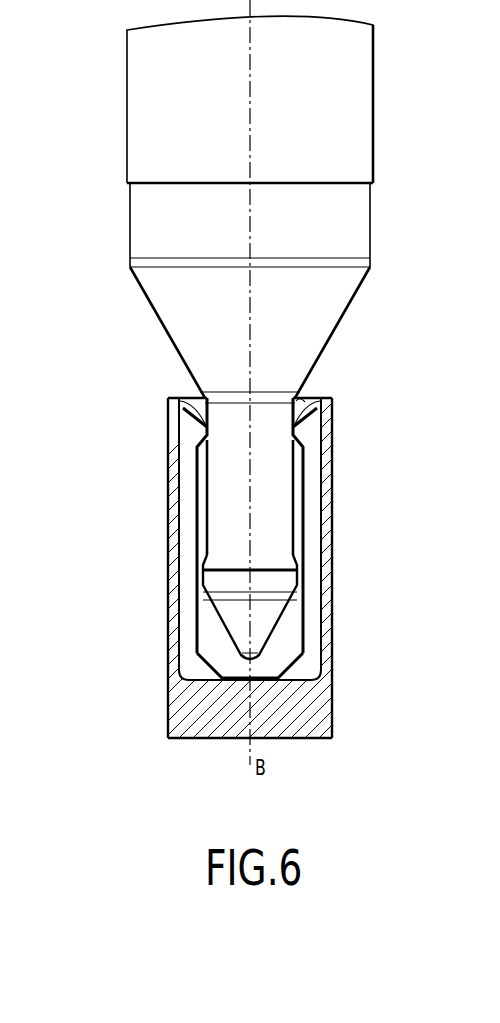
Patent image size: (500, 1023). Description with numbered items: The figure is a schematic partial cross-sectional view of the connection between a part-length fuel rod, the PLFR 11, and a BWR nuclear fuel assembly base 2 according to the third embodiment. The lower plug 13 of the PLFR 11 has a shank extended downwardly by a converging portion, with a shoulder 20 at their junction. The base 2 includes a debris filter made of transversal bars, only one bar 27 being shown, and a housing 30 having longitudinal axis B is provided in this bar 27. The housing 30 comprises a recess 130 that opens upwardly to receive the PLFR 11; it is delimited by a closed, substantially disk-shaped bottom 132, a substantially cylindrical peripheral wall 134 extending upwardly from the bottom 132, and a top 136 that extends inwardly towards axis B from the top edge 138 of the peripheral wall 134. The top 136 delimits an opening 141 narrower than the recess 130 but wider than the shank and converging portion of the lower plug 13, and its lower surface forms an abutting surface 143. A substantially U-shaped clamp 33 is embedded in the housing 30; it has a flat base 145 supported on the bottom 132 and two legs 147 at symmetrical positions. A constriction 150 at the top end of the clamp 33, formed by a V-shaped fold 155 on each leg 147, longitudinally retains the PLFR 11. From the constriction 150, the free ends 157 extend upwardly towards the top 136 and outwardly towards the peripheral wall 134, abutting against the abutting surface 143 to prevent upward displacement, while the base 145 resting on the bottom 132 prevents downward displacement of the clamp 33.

The base 2 is at (78, 556).
The PLFR 11 is at (127, 90).
The lower plug 13 is at (205, 517).
The shoulder 20 is at (263, 560).
The bar 27 is at (333, 522).
The housing 30 is at (158, 348).
The clamp 33 is at (187, 473).
The recess 130 is at (310, 553).
The bottom 132 is at (312, 669).
The peripheral wall 134 is at (328, 591).
The top 136 is at (306, 399).
The top edge 138 is at (333, 407).
The opening 141 is at (301, 397).
The abutting surface 143 is at (287, 396).
The base 145 is at (226, 680).
The legs 147 is at (197, 632).
The constriction 150 is at (187, 428).
The V-shaped fold 155 is at (206, 426).
The free ends 157 is at (204, 396).